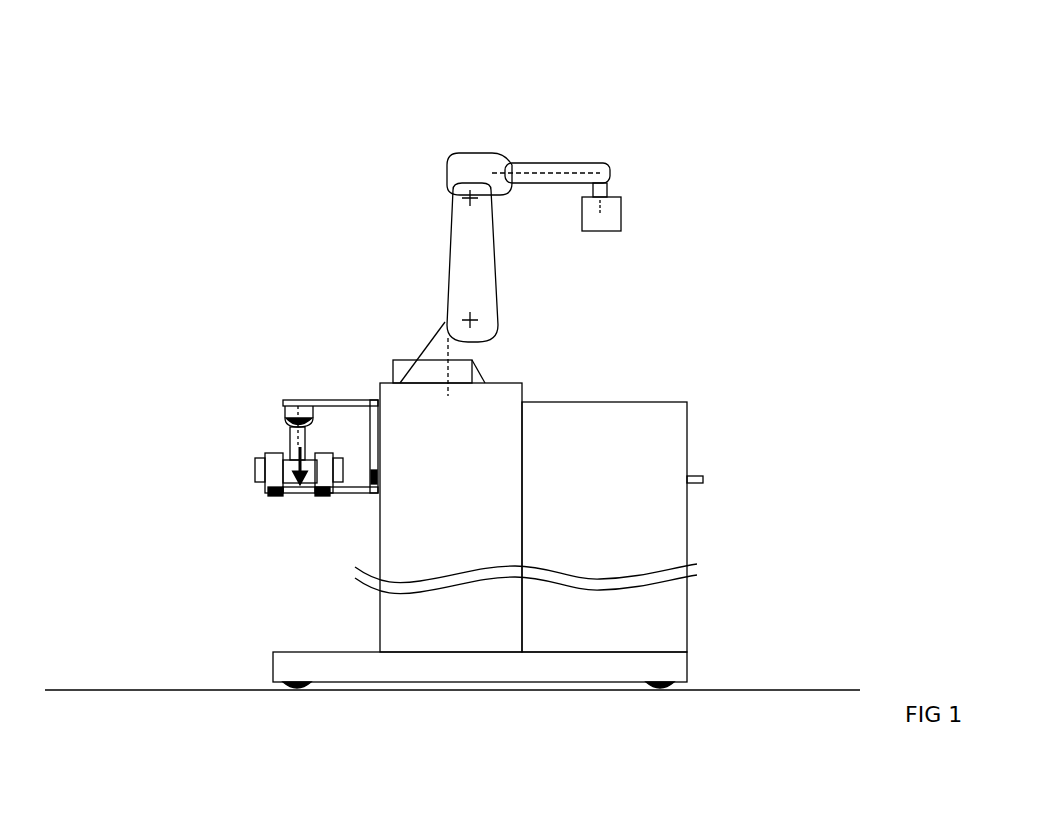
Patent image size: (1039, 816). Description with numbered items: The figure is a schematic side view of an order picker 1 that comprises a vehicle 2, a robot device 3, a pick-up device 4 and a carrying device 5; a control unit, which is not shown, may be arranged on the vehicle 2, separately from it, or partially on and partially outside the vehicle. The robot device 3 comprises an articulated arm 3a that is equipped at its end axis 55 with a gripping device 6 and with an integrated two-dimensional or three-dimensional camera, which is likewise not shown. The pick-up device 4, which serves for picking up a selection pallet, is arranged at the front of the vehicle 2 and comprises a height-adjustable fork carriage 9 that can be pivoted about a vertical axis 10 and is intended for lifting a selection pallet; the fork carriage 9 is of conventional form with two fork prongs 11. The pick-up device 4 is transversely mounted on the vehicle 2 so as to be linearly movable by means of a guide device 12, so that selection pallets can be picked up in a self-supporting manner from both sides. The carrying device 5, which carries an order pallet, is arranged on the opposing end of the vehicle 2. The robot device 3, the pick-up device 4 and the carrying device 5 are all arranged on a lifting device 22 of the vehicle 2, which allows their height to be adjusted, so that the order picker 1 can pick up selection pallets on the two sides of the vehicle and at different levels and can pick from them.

The order picker 1 is at (421, 167).
The vehicle 2 is at (688, 668).
The robot device 3 is at (477, 150).
The articulated arm 3a is at (530, 163).
The pick-up device 4 is at (283, 402).
The carrying device 5 is at (700, 478).
The gripping device 6 is at (615, 197).
The fork carriage 9 is at (258, 465).
The vertical axis 10 is at (302, 392).
The fork prongs 11 is at (320, 498).
The guide device 12 is at (375, 478).
The lifting device 22 is at (670, 440).
The end axis 55 is at (610, 187).